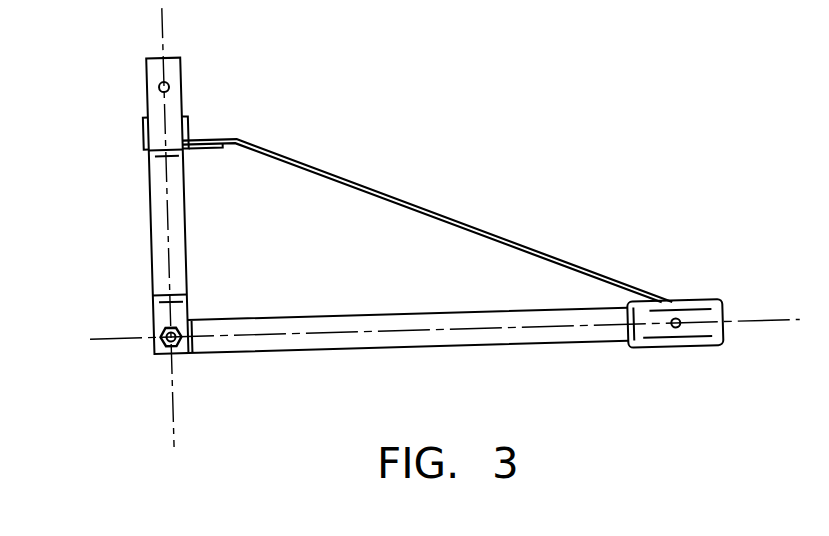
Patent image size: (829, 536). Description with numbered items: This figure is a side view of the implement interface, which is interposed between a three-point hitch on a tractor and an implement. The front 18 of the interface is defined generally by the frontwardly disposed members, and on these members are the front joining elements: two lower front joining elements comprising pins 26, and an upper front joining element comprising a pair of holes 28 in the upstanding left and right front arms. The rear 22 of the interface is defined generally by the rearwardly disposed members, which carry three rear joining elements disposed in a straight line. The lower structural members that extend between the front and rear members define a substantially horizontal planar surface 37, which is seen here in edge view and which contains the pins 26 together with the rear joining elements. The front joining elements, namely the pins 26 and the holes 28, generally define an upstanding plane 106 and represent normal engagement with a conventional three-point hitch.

The front 18 is at (152, 247).
The rear 22 is at (722, 300).
The pins 26 is at (152, 347).
The holes 28 is at (168, 87).
The planar surface 37 is at (250, 332).
The upstanding plane 106 is at (173, 385).